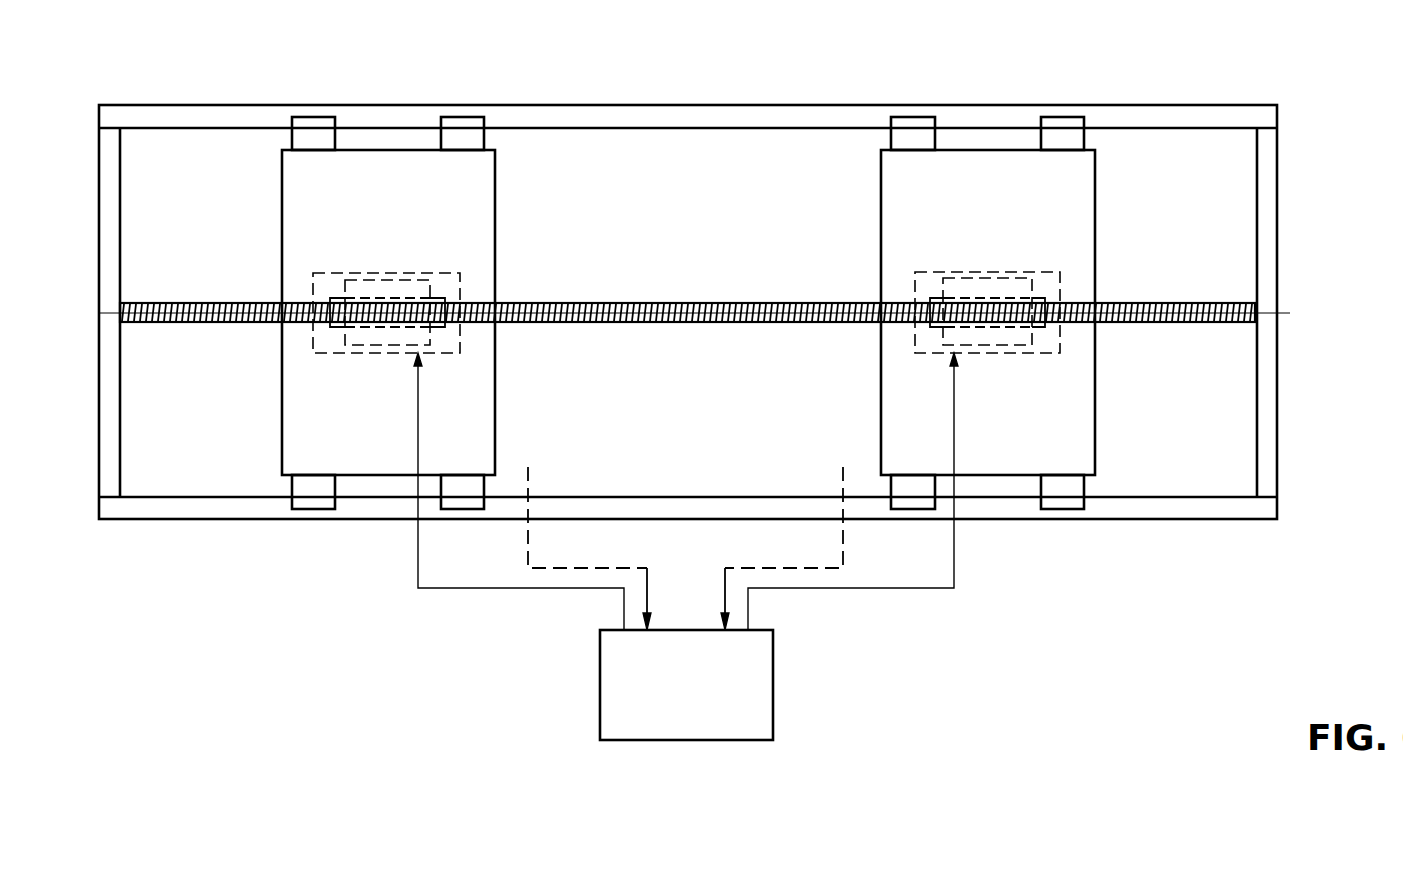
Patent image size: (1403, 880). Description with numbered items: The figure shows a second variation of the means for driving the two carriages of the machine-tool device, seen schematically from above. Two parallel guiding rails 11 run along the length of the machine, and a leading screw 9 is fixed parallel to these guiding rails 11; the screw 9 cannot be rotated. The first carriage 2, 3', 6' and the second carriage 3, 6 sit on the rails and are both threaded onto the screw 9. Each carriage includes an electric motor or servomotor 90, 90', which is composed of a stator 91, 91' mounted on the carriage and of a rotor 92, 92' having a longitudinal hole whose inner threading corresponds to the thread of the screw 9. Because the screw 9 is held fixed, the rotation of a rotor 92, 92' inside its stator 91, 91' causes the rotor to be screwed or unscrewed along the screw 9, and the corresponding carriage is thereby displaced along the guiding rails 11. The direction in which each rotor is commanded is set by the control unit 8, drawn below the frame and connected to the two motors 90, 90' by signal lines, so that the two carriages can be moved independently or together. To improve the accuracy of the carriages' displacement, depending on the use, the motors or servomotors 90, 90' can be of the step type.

The first carriage 2 is at (385, 420).
The first carriage 3' is at (385, 420).
The drive nut 6' is at (385, 420).
The second carriage 3 is at (988, 365).
The drive nut 6 is at (988, 365).
The control unit 8 is at (693, 695).
The leading screw 9 is at (725, 322).
The guiding rails 11 is at (1183, 113).
The electric motor or servomotor 90 is at (999, 267).
The electric motor or servomotor 90' is at (386, 267).
The stator 91 is at (1018, 281).
The stator 91' is at (419, 282).
The rotor 92 is at (993, 356).
The rotor 92' is at (371, 354).